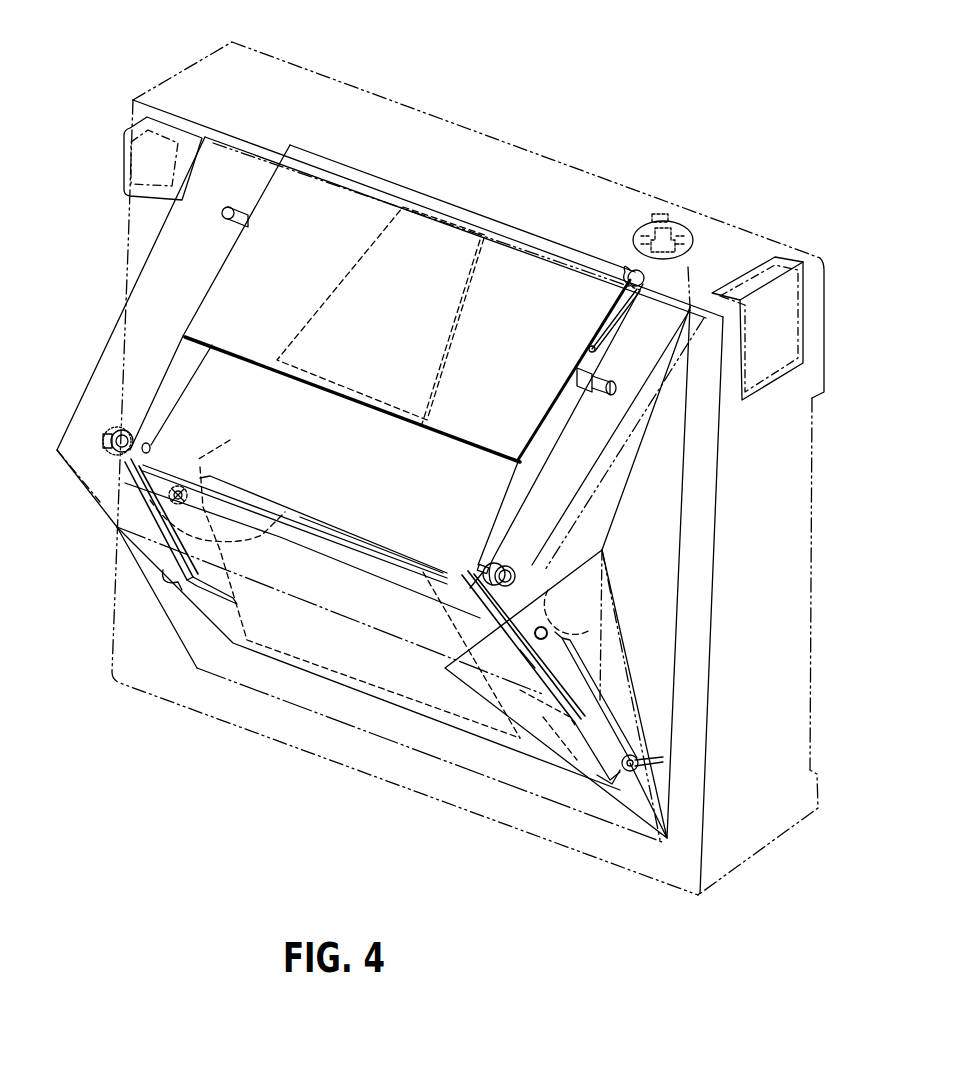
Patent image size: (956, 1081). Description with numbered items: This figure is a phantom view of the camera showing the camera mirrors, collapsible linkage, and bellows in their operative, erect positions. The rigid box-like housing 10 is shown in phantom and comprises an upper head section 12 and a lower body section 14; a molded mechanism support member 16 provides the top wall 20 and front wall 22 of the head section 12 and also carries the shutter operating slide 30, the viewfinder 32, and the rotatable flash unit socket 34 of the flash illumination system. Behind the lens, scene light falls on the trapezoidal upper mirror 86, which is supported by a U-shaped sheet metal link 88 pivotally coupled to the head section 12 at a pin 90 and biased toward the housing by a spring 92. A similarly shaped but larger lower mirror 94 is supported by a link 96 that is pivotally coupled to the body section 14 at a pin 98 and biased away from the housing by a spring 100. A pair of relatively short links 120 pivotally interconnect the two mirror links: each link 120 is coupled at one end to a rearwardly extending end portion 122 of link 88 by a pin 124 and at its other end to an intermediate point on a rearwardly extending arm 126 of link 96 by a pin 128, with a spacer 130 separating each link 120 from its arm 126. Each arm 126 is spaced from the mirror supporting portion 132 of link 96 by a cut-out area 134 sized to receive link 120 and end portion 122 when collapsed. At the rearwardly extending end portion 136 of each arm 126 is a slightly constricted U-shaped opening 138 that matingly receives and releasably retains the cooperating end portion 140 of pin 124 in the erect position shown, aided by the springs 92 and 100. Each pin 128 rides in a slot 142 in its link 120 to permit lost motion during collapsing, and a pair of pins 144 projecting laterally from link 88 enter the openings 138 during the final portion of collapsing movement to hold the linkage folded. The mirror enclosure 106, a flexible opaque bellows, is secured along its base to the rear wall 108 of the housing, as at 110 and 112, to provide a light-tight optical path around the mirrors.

The housing 10 is at (420, 798).
The head section 12 is at (352, 78).
The body section 14 is at (806, 716).
The mechanism support member 16 is at (250, 62).
The top wall 20 is at (413, 140).
The front wall 22 is at (822, 292).
The shutter operating slide 30 is at (775, 300).
The viewfinder 32 is at (140, 166).
The rotatable flash unit socket 34 is at (668, 224).
The upper mirror 86 is at (360, 257).
The U-shaped link 88 is at (546, 303).
The pin 90 is at (648, 282).
The spring 92 is at (600, 346).
The lower mirror 94 is at (283, 504).
The link 96 is at (356, 665).
The pin 98 is at (640, 760).
The spring 100 is at (545, 658).
The mirror enclosure 106 is at (133, 330).
The rear wall 108 is at (130, 652).
The securing location 110 is at (258, 140).
The securing location 112 is at (293, 708).
The short link 120 is at (155, 475).
The rearwardly extending end portion 122 is at (160, 395).
The pin 124 is at (152, 445).
The rearwardly extending arm 126 is at (117, 527).
The pin 128 is at (228, 478).
The spacer 130 is at (165, 497).
The mirror supporting portion 132 is at (318, 524).
The cut-out area 134 is at (195, 598).
The rearwardly extending end portion 136 is at (128, 430).
The U-shaped opening 138 is at (105, 432).
The end portion 140 is at (103, 443).
The slot 142 is at (205, 475).
The pin 144 is at (232, 222).